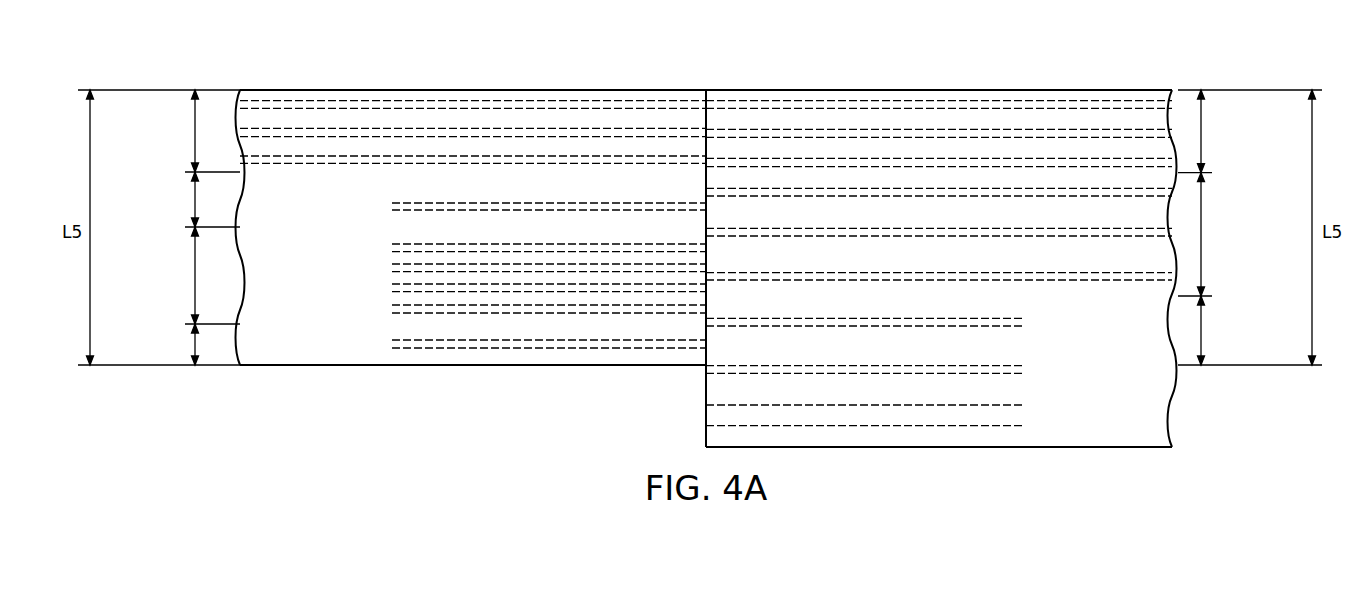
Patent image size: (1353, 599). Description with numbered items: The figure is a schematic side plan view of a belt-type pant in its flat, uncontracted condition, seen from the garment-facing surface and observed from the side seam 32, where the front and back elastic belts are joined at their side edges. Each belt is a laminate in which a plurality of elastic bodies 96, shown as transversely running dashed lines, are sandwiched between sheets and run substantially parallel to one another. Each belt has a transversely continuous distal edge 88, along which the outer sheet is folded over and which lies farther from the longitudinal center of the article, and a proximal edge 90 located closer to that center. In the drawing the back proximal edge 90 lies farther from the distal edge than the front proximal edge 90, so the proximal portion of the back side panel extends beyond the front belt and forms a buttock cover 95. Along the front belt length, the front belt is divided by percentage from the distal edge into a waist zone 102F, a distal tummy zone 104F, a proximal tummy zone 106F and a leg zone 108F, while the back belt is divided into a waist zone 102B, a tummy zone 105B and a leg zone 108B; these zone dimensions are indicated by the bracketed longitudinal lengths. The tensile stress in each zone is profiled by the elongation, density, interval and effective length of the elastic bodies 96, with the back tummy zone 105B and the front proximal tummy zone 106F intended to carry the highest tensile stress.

The side seam 32 is at (706, 90).
The distal edge 88 is at (383, 88).
The proximal edge 90 is at (474, 367).
The buttock cover 95 is at (683, 409).
The elastic bodies 96 is at (272, 100).
The waist zone 102F is at (195, 131).
The distal tummy zone 104F is at (195, 200).
The proximal tummy zone 106F is at (195, 275).
The leg zone 108F is at (195, 348).
The waist zone 102B is at (1201, 130).
The tummy zone 105B is at (1201, 232).
The leg zone 108B is at (1201, 331).